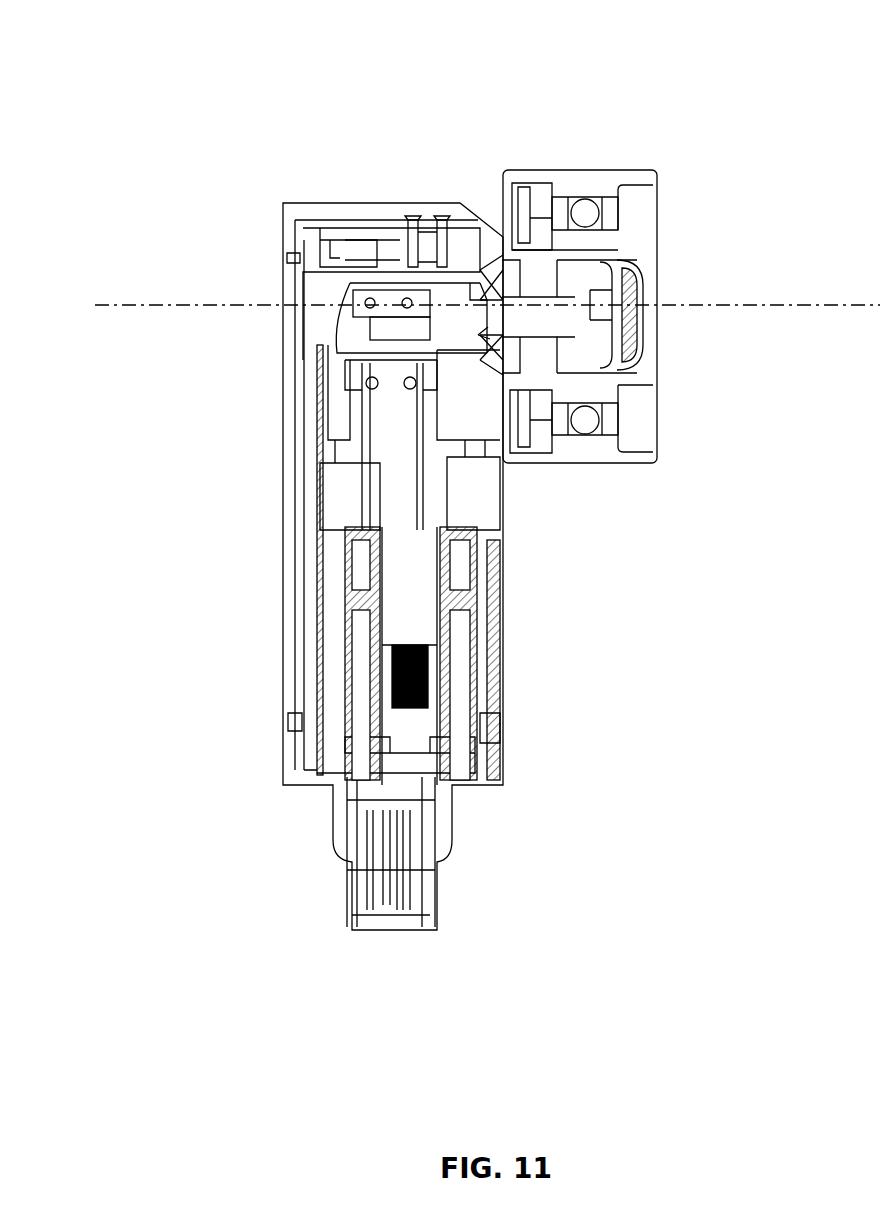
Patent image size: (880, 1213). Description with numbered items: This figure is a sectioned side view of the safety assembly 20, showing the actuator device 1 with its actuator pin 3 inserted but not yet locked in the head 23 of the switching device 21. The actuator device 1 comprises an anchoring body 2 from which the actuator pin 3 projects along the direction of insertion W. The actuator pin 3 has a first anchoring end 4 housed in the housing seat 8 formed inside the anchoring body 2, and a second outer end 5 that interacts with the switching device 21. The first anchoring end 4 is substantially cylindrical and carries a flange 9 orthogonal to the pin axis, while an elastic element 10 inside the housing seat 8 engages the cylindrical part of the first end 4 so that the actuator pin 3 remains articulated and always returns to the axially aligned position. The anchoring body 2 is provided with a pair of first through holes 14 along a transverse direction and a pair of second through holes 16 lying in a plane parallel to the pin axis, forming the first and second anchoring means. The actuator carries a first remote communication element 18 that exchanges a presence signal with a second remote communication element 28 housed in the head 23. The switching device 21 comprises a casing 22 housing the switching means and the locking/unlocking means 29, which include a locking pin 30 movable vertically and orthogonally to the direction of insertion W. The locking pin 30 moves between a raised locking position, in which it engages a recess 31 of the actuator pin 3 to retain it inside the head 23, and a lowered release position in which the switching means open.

The actuator device 1 is at (685, 151).
The anchoring body 2 is at (610, 161).
The actuator pin 3 is at (480, 338).
The first anchoring end 4 is at (640, 311).
The second outer end 5 is at (350, 311).
The housing seat 8 is at (644, 366).
The flange 9 is at (576, 372).
The elastic element 10 is at (645, 290).
The first through holes 14 is at (590, 212).
The second through holes 16 is at (645, 210).
The first remote communication element 18 is at (296, 281).
The assembly 20 is at (178, 97).
The switching device 21 is at (268, 226).
The casing 22 is at (290, 612).
The top head 23 is at (394, 257).
The second remote communication element 28 is at (388, 258).
The locking/unlocking means 29 is at (465, 598).
The locking pin 30 is at (385, 445).
The recess 31 is at (352, 349).
The direction of insertion W is at (104, 305).